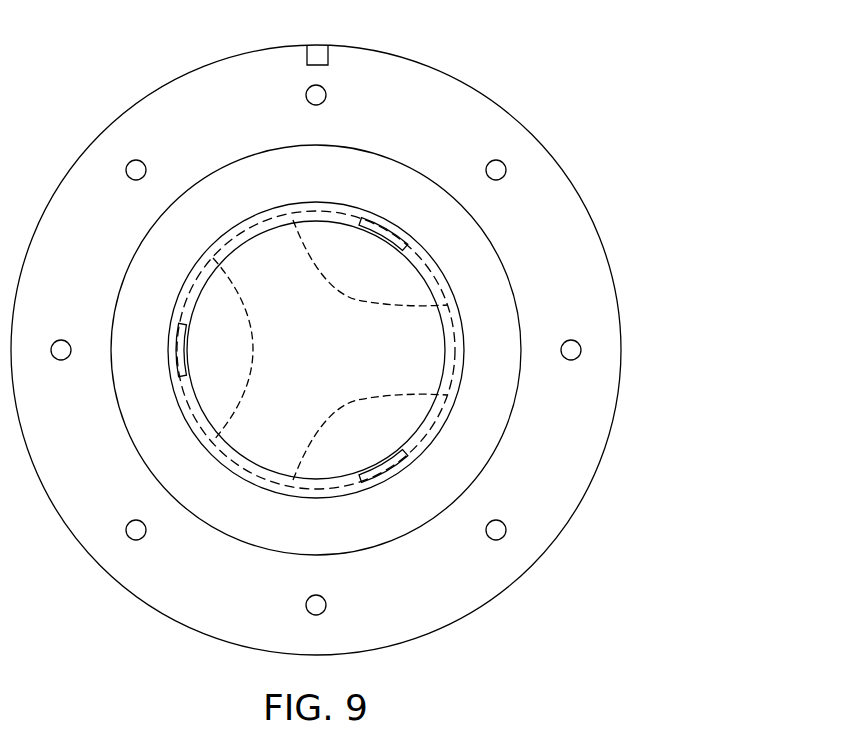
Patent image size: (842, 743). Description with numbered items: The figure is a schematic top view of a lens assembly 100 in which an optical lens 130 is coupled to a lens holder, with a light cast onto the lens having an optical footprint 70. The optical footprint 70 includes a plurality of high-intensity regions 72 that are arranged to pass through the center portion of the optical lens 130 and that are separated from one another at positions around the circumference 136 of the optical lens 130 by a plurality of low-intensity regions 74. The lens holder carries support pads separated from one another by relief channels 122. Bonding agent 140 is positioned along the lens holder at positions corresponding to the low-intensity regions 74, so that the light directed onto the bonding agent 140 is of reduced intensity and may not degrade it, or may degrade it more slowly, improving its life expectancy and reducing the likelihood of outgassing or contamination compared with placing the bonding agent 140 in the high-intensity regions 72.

The lens assembly 100 is at (592, 91).
The optical footprint 70 is at (527, 268).
The relief channels 122 is at (137, 277).
The circumference 136 is at (260, 487).
The optical lens 130 is at (452, 417).
The high-intensity regions 72 is at (265, 253).
The low-intensity regions 74 is at (407, 281).
The bonding agent 140 is at (377, 221).